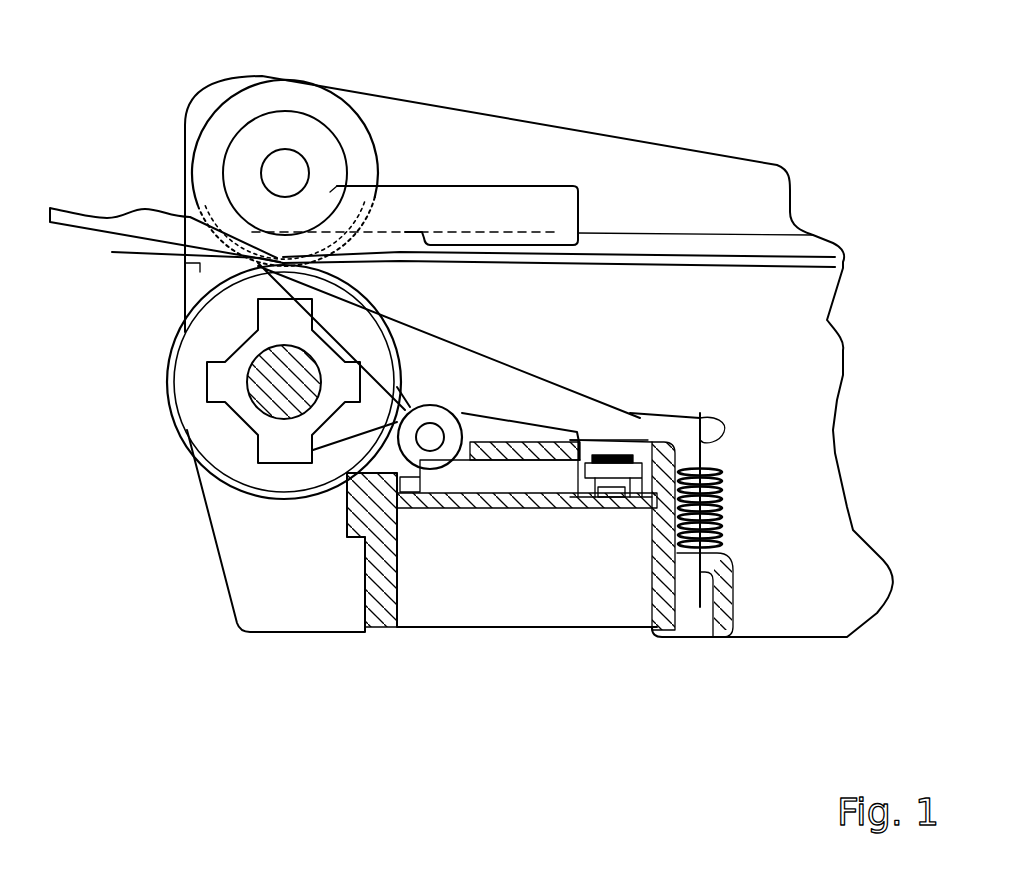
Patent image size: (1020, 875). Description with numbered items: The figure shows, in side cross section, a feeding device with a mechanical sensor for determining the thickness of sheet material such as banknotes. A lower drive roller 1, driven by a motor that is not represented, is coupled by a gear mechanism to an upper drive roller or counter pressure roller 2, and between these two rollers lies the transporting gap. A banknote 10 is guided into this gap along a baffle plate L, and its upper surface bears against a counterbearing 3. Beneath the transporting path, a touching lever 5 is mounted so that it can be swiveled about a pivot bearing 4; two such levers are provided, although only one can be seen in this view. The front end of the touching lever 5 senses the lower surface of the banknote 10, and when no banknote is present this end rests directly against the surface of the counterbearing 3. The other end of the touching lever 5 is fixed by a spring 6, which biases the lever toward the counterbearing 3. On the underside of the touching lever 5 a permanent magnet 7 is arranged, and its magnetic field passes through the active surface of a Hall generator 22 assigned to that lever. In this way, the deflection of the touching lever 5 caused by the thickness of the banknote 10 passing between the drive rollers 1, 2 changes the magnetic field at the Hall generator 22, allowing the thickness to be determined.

The lower drive roller 1 is at (205, 432).
The counter pressure roller 2 is at (235, 120).
The counterbearing 3 is at (402, 205).
The pivot bearing 4 is at (448, 458).
The touching lever 5 is at (518, 385).
The spring 6 is at (722, 498).
The permanent magnet 7 is at (613, 453).
The banknote 10 is at (622, 265).
The Hall generator 22 is at (615, 497).
The baffle plate L is at (178, 218).